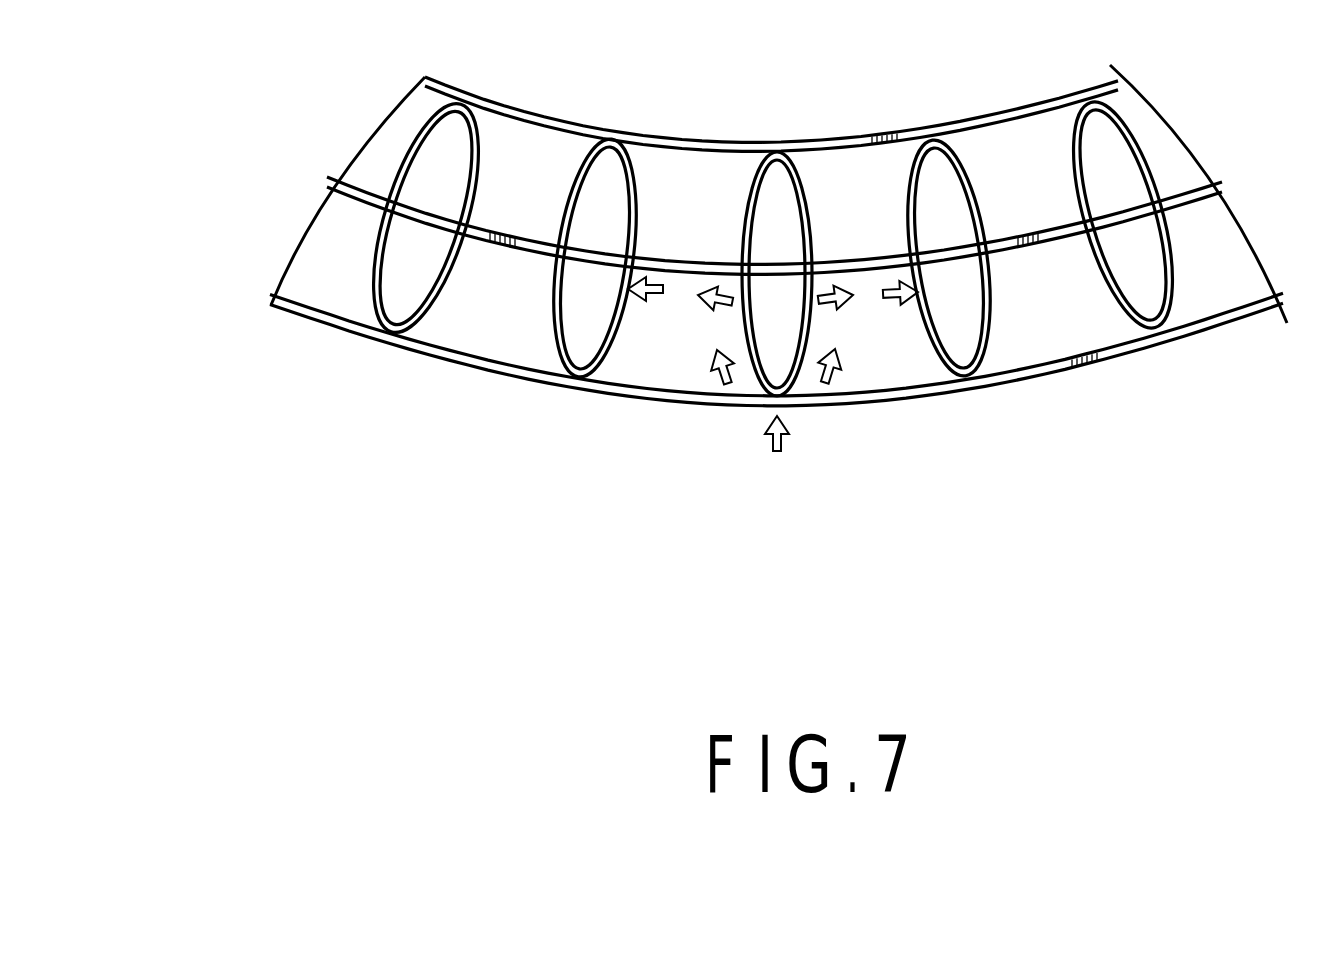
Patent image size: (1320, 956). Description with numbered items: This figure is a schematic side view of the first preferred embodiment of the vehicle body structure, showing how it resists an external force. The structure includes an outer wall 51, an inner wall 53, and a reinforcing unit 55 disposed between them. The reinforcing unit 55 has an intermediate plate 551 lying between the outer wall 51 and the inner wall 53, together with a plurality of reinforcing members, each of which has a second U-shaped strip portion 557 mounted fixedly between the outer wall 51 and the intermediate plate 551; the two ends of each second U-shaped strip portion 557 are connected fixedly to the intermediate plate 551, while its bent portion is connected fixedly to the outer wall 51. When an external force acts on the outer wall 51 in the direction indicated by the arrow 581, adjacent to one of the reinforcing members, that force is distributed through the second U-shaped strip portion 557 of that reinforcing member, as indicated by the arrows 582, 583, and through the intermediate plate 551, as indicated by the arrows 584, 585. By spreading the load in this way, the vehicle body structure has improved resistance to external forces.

The reinforcing unit 55 is at (254, 242).
The inner wall 53 is at (787, 149).
The outer wall 51 is at (875, 398).
The intermediate plate 551 is at (1175, 200).
The second U-shaped strip portion 557 is at (611, 325).
The arrow 581 is at (777, 455).
The arrow 582 is at (725, 384).
The arrow 583 is at (831, 381).
The arrow 584 is at (703, 302).
The arrow 585 is at (845, 304).